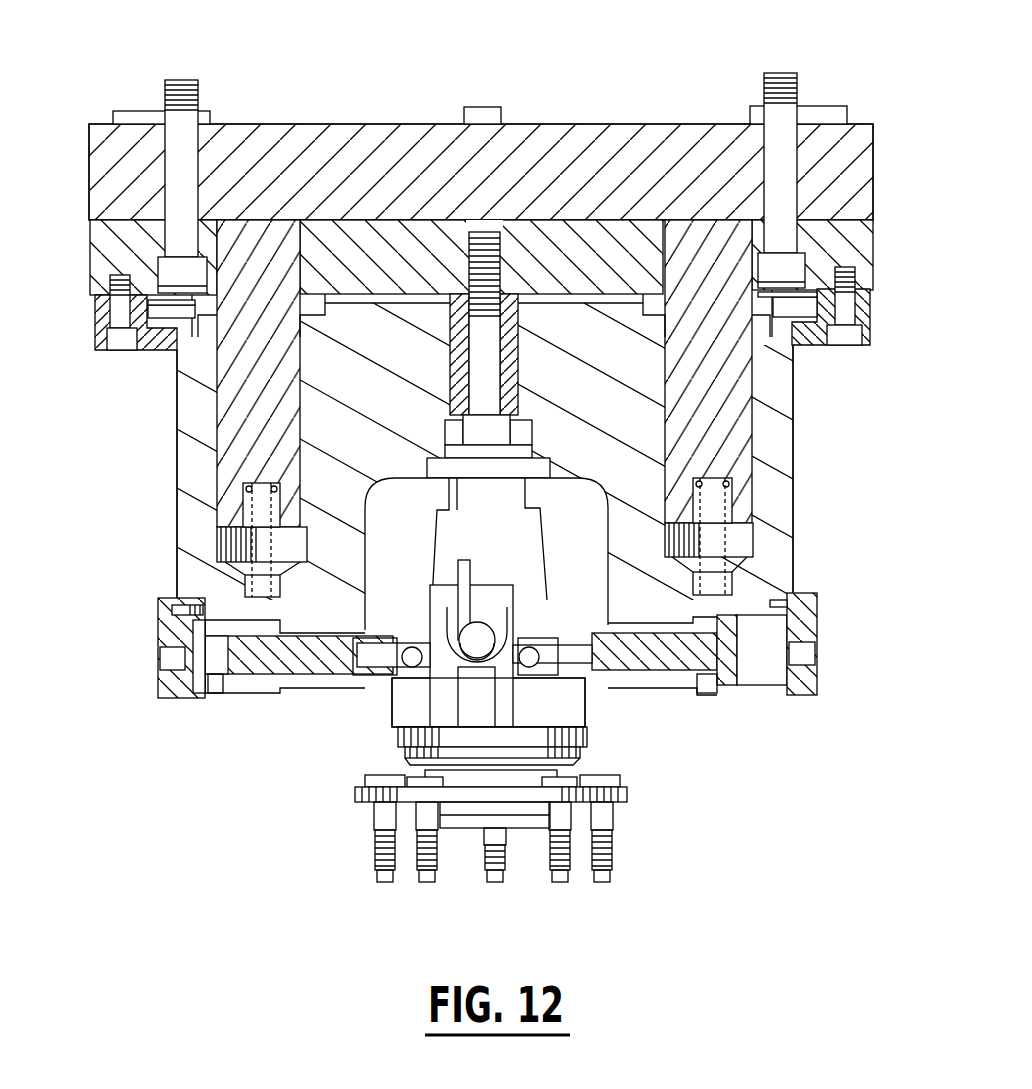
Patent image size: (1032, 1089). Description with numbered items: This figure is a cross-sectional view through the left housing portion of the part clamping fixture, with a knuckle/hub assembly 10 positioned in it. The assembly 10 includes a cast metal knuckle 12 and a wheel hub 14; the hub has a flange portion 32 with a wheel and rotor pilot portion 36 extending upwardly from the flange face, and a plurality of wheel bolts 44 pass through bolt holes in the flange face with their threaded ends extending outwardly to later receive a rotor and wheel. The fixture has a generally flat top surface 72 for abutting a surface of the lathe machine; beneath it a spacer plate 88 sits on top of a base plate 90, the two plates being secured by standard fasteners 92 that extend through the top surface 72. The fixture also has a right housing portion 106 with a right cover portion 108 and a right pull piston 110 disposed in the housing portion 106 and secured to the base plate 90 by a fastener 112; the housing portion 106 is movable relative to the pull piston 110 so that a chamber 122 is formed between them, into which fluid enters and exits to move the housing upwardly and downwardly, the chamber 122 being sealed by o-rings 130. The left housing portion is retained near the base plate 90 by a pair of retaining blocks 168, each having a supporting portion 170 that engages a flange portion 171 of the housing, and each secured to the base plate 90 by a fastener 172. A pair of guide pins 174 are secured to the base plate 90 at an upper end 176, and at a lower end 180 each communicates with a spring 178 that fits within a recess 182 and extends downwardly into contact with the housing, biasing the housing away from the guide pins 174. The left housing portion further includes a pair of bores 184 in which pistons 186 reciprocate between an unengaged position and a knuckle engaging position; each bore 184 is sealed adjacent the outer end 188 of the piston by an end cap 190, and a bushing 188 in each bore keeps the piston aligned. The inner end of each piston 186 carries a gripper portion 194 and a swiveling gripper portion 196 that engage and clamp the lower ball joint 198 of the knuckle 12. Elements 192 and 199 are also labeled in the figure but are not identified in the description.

The knuckle/hub assembly 10 is at (680, 727).
The knuckle 12 is at (403, 703).
The wheel hub 14 is at (355, 789).
The flange portion 32 is at (628, 795).
The wheel and rotor pilot portion 36 is at (467, 828).
The wheel bolts 44 is at (592, 868).
The generally flat top surface 72 is at (638, 122).
The spacer plate 88 is at (868, 135).
The base plate 90 is at (867, 225).
The fasteners 92 is at (198, 82).
The right housing portion 106 is at (440, 457).
The right cover portion 108 is at (551, 460).
The right pull piston 110 is at (520, 326).
The fastener 112 is at (500, 222).
The chamber 122 is at (530, 445).
The o-rings 130 is at (452, 408).
The retaining blocks 168 is at (95, 313).
The supporting portion 170 is at (150, 348).
The flange portion 171 is at (150, 352).
The fastener 172 is at (110, 277).
The guide pins 174 is at (304, 388).
The upper end 176 is at (265, 230).
The spring 178 is at (277, 513).
The lower end 180 is at (305, 438).
The recess 182 is at (246, 508).
The bores 184 is at (160, 622).
The piston 186 is at (203, 688).
The outer end 188 is at (205, 655).
The end cap 190 is at (158, 640).
The rod 192 is at (317, 642).
The gripper portion 194 is at (380, 653).
The swiveling gripper portion 196 is at (417, 675).
The lower ball joint 198 is at (470, 600).
The notch 199 is at (248, 685).